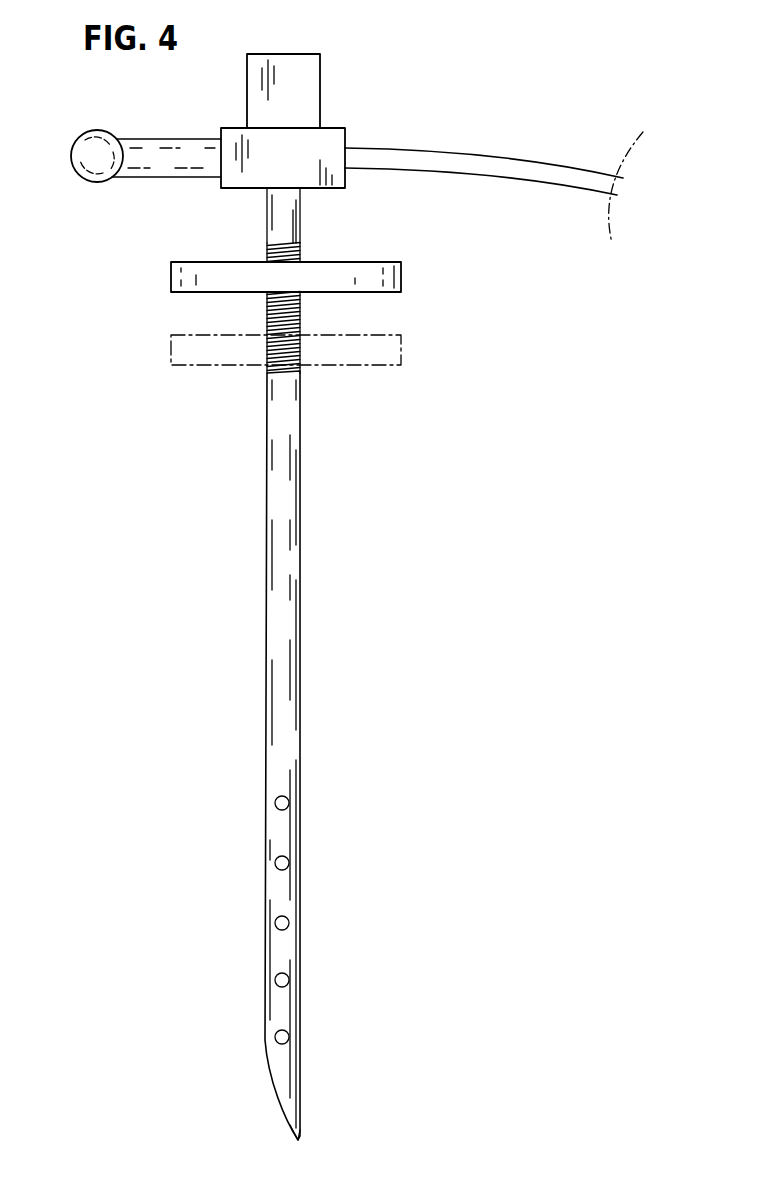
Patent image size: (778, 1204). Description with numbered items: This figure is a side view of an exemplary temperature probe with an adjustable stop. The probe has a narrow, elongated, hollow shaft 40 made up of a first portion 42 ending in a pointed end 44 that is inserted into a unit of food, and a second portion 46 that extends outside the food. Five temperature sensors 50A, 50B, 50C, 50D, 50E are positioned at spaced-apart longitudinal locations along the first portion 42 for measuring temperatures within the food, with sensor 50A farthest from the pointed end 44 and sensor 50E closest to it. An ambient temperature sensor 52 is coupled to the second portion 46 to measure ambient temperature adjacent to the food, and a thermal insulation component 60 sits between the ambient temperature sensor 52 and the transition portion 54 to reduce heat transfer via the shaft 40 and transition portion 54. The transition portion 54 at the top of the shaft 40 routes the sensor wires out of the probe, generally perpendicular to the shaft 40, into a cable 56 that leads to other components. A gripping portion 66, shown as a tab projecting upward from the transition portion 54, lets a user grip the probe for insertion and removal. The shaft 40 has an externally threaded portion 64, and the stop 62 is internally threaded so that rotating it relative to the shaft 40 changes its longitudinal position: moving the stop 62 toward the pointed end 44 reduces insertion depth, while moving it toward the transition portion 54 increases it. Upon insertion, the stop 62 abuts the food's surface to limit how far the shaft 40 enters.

The shaft 40 is at (247, 612).
The first portion 42 is at (272, 712).
The pointed end 44 is at (298, 1140).
The second portion 46 is at (267, 215).
The temperature sensor A 50A is at (275, 803).
The temperature sensor B 50B is at (275, 863).
The temperature sensor C 50C is at (275, 923).
The temperature sensor D 50D is at (275, 980).
The temperature sensor E 50E is at (275, 1037).
The ambient temperature sensor 52 is at (81, 139).
The transition portion 54 is at (325, 128).
The cable 56 is at (437, 150).
The thermal insulation component 60 is at (168, 139).
The stop 62 is at (171, 282).
The externally threaded portion 64 is at (300, 247).
The gripping portion 66 is at (305, 52).